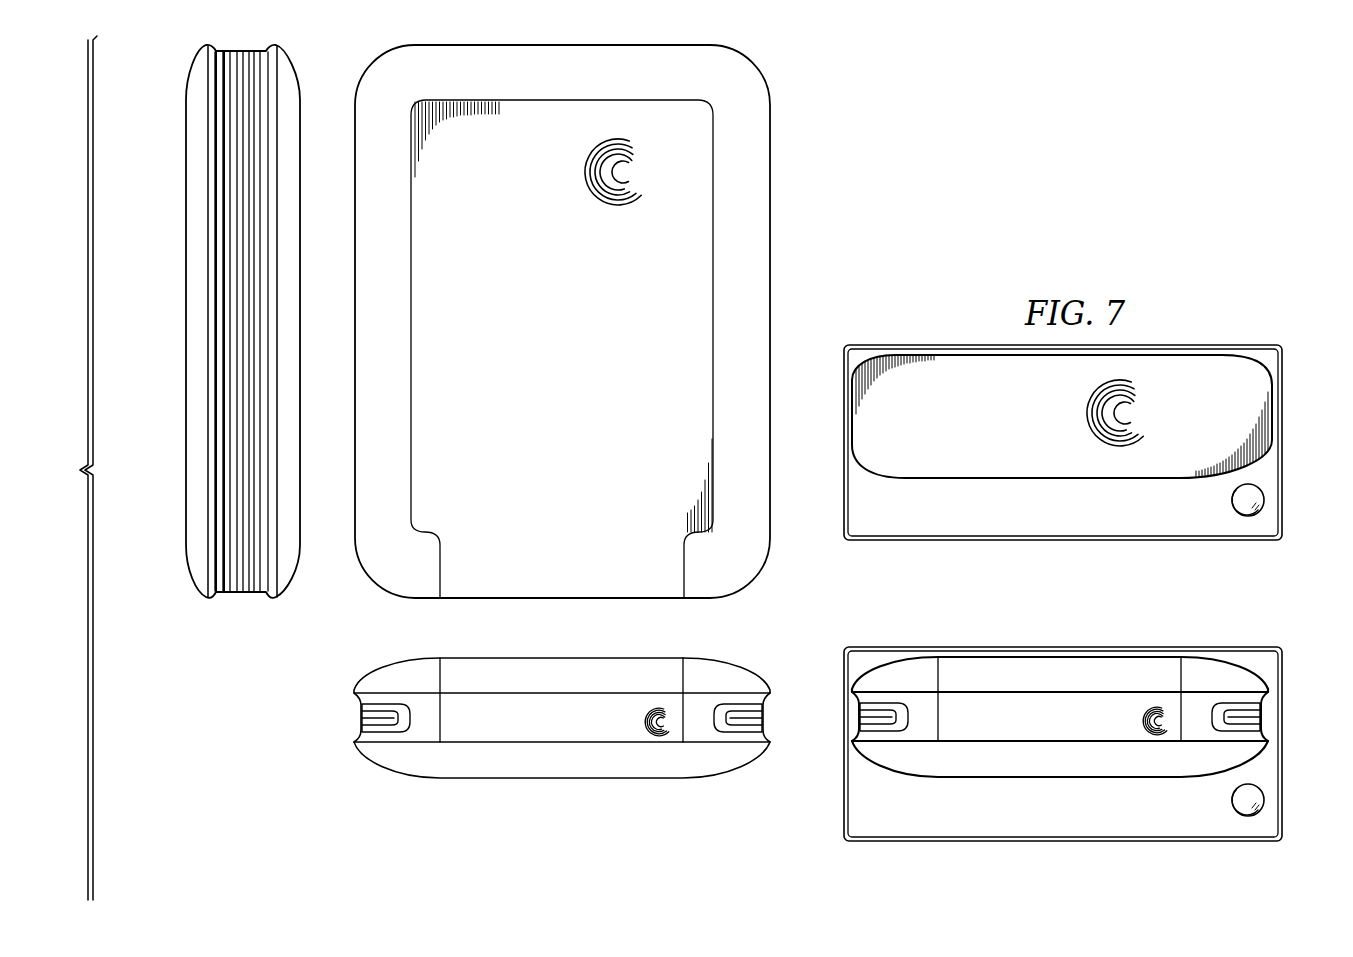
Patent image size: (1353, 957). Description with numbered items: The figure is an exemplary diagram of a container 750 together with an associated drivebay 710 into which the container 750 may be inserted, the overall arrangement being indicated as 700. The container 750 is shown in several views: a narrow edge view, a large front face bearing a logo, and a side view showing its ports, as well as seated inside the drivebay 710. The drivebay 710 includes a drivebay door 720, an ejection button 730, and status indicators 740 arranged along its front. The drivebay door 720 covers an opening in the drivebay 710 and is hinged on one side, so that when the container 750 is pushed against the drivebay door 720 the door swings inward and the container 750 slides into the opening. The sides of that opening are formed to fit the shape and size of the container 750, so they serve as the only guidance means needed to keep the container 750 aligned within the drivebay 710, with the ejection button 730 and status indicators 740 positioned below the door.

The external data storage device system 700 is at (917, 230).
The drivebay 710 is at (1218, 532).
The drivebay door 720 is at (1263, 408).
The ejection button 730 is at (1252, 494).
The status indicators 740 is at (1199, 548).
The container 750 is at (185, 263).